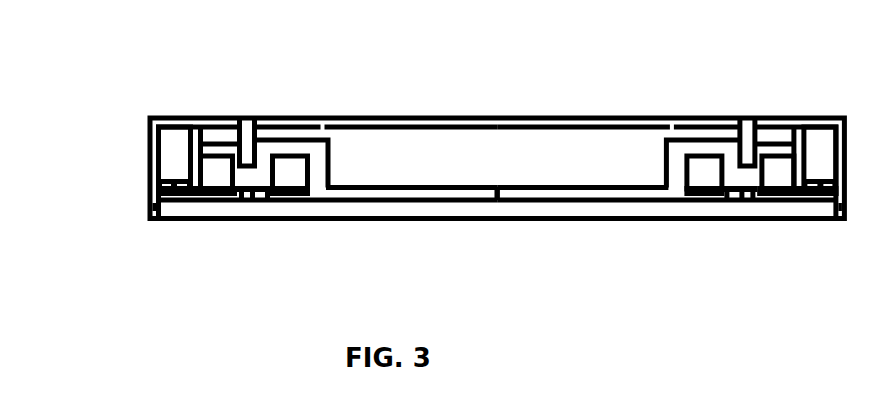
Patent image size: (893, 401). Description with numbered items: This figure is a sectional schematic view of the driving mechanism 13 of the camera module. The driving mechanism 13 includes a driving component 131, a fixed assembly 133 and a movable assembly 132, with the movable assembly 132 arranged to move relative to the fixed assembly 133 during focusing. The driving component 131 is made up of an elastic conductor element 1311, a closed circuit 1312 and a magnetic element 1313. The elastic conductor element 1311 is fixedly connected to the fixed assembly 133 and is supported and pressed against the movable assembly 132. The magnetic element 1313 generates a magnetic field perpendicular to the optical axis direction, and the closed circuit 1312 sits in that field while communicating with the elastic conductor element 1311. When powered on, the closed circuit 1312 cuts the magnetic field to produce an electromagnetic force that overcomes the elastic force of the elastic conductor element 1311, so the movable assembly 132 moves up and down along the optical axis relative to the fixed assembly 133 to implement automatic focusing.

The driving mechanism 13 is at (141, 46).
The driving component 131 is at (74, 100).
The elastic conductor element 1311 is at (221, 194).
The closed circuit 1312 is at (287, 190).
The magnetic element 1313 is at (181, 152).
The movable assembly 132 is at (312, 160).
The fixed assembly 133 is at (288, 212).